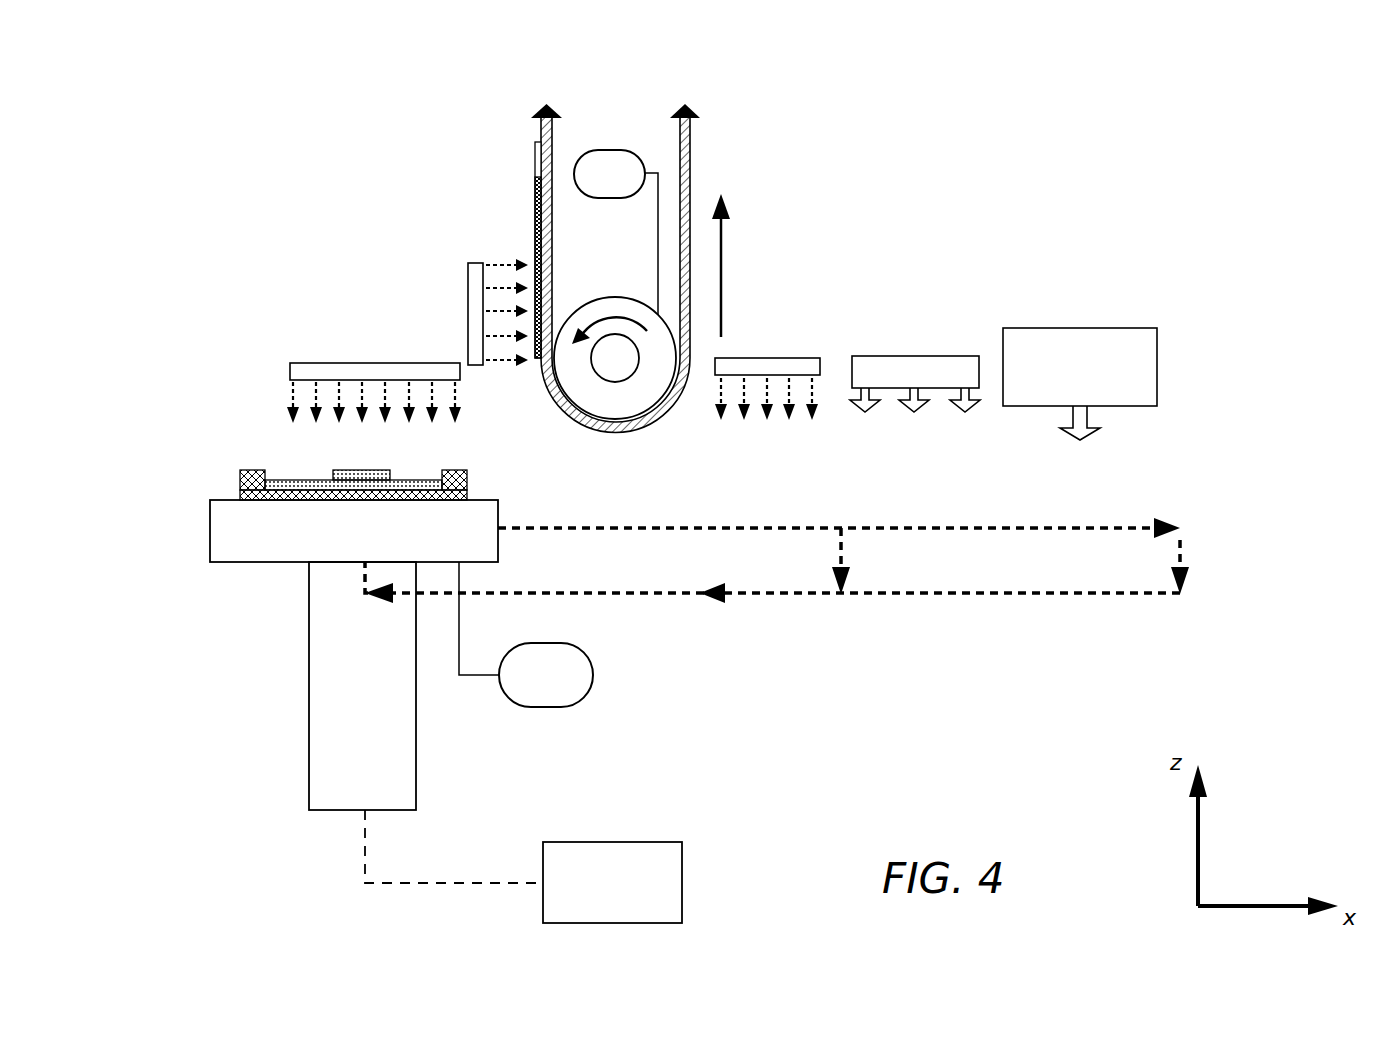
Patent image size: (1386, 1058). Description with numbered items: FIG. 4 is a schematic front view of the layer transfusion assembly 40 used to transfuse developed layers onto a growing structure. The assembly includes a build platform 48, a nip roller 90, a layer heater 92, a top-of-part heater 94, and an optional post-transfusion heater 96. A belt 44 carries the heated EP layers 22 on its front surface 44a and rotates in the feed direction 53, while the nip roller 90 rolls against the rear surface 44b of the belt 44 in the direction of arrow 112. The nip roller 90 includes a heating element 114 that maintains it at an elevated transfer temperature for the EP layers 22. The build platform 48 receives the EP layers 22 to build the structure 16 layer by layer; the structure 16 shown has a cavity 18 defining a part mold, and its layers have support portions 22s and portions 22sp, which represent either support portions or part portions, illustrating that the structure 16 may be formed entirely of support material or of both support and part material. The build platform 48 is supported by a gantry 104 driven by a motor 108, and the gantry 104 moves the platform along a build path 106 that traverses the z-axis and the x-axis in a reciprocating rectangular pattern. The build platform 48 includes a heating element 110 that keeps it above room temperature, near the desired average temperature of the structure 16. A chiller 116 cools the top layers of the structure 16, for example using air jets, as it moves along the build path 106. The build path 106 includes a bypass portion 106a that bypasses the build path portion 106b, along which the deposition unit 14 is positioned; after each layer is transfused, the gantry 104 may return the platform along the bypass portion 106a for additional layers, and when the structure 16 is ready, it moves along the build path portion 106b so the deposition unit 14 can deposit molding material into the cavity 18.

The layer transfusion assembly 40 is at (352, 165).
The belt 44 is at (518, 133).
The belt front surface 44a is at (692, 165).
The belt rear surface 44b is at (553, 140).
The EP layer 22 is at (524, 213).
The support portion 22s is at (253, 470).
The support or part portion 22sp is at (365, 470).
The cavity 18 is at (440, 458).
The structure 16 is at (222, 432).
The nip roller 90 is at (568, 315).
The nip roller rotation direction 112 is at (638, 317).
The nip roller heating element 114 is at (597, 150).
The feed direction 53 is at (722, 245).
The layer heater 92 is at (457, 273).
The top-of-part heater 94 is at (322, 352).
The post-transfusion heater 96 is at (798, 346).
The chiller 116 is at (895, 355).
The deposition unit 14 is at (1122, 328).
The build platform 48 is at (210, 535).
The gantry 104 is at (416, 740).
The build platform heating element 110 is at (595, 660).
The motor 108 is at (682, 868).
The build path 106 is at (767, 604).
The bypass portion 106a is at (845, 560).
The build path portion 106b is at (1020, 528).